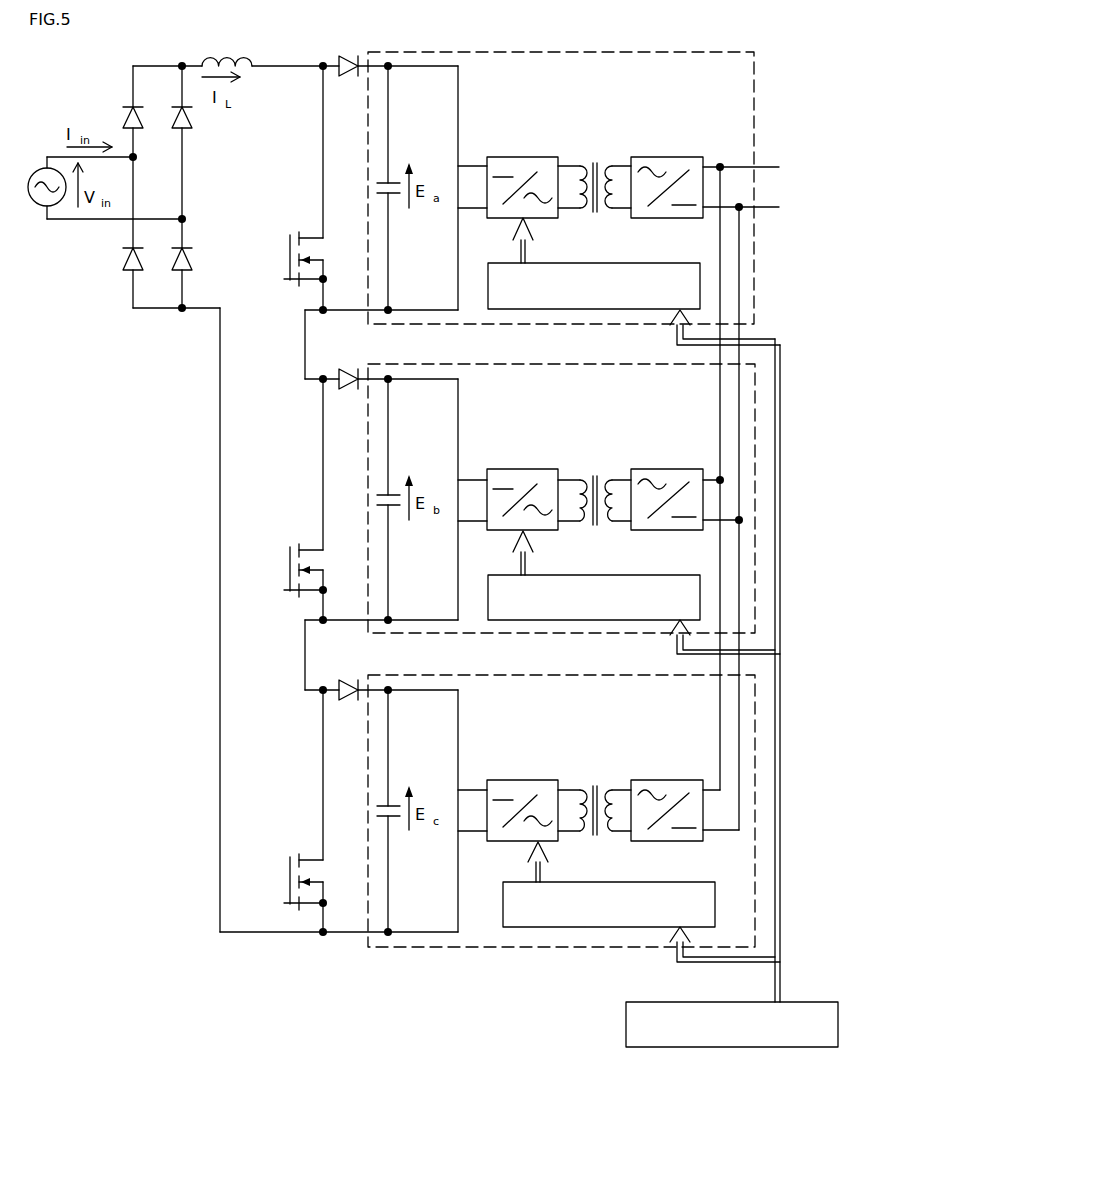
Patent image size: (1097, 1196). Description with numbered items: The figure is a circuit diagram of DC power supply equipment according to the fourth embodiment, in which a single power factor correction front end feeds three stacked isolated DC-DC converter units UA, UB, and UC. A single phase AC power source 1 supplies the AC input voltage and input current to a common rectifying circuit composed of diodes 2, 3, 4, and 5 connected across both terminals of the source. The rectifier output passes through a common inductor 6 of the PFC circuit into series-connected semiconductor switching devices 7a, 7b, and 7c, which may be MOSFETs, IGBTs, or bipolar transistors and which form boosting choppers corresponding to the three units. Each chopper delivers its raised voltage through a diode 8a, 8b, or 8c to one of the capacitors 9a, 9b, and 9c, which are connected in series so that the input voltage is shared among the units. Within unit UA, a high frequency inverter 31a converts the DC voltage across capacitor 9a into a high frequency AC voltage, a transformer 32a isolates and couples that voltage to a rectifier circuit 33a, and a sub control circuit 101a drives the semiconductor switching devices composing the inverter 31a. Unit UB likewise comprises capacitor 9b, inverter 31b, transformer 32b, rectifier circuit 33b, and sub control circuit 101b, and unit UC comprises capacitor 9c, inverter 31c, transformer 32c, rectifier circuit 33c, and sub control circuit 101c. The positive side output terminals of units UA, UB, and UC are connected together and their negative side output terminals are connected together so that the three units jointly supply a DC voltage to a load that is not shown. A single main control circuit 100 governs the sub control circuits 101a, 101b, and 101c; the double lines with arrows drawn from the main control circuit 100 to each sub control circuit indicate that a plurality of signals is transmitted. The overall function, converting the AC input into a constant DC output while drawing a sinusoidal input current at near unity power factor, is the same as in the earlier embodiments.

The single phase AC power source 1 is at (46, 172).
The diode 2 is at (127, 103).
The diode 3 is at (126, 243).
The diode 4 is at (177, 104).
The diode 5 is at (176, 244).
The inductor 6 is at (224, 54).
The semiconductor switching device 7a is at (283, 250).
The semiconductor switching device 7b is at (290, 550).
The semiconductor switching device 7c is at (290, 860).
The diode 8a is at (348, 53).
The diode 8b is at (352, 370).
The diode 8c is at (351, 680).
The capacitor 9a is at (382, 175).
The capacitor 9b is at (383, 487).
The capacitor 9c is at (383, 791).
The high frequency inverter 31a is at (523, 161).
The high frequency inverter 31b is at (523, 474).
The high frequency inverter 31c is at (526, 784).
The transformer 32a is at (598, 160).
The transformer 32b is at (598, 474).
The transformer 32c is at (600, 780).
The rectifier circuit 33a is at (673, 162).
The rectifier circuit 33b is at (673, 472).
The rectifier circuit 33c is at (667, 780).
The sub control circuit 101a is at (577, 270).
The sub control circuit 101b is at (577, 582).
The sub control circuit 101c is at (603, 890).
The main control circuit 100 is at (817, 1010).
The unit UA is at (754, 100).
The unit UB is at (755, 413).
The unit UC is at (755, 722).